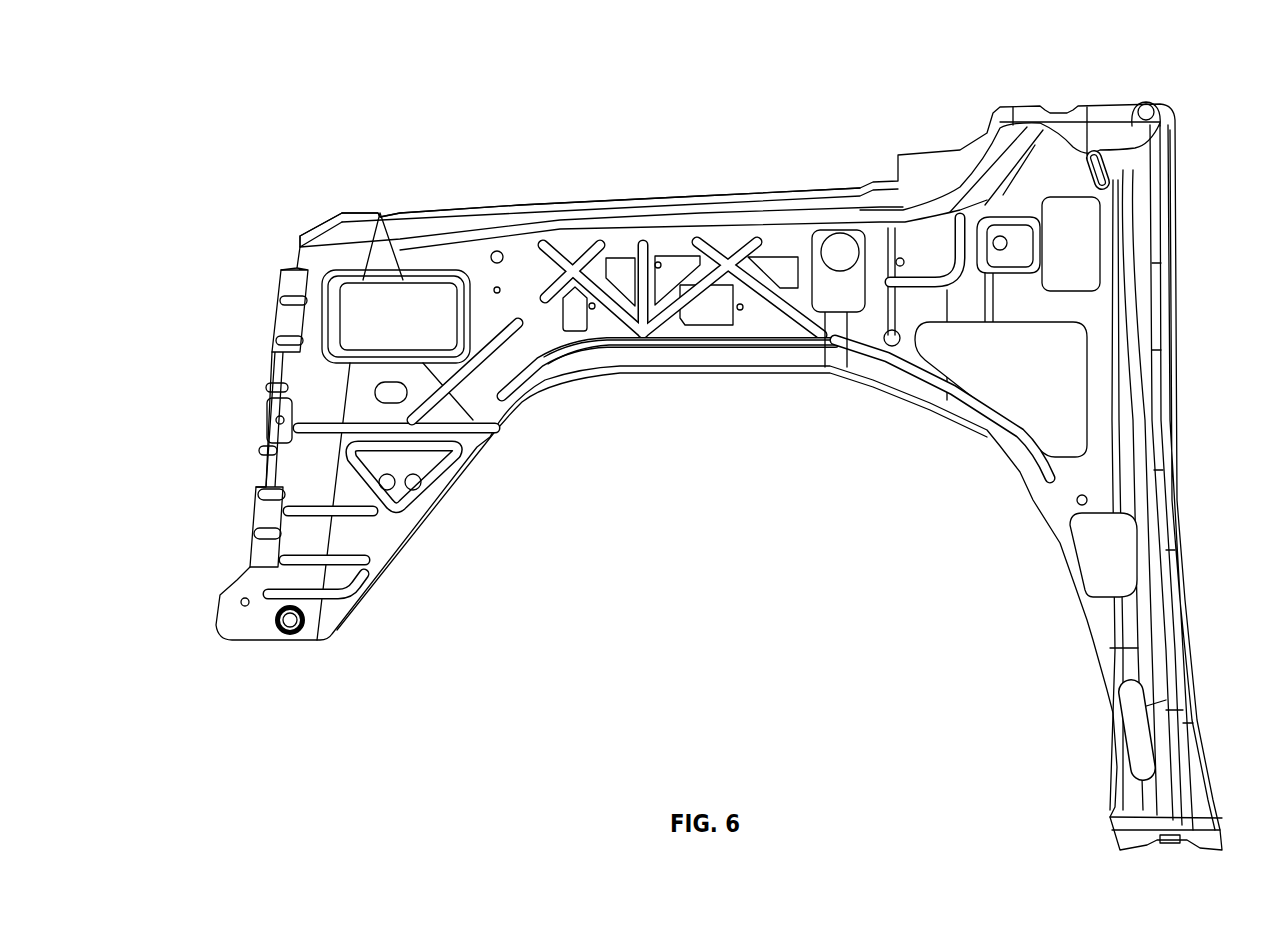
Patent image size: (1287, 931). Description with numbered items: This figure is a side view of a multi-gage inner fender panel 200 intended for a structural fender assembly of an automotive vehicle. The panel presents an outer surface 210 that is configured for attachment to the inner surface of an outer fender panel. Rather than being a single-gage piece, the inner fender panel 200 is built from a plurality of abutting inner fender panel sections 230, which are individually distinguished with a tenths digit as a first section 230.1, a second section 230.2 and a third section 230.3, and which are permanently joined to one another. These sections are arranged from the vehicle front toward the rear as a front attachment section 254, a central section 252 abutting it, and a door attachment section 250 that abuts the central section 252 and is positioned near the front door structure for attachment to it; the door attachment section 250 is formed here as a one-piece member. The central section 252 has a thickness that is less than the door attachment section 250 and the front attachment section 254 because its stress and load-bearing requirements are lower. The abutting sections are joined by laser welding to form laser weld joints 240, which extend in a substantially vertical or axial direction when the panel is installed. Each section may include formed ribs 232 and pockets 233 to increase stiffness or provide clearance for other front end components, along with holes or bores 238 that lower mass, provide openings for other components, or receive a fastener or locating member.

The inner fender panel 200 is at (230, 82).
The front attachment section 254 is at (372, 121).
The central section 252 is at (882, 106).
The door attachment section 250 is at (1177, 93).
The inner fender panel sections 230 is at (366, 210).
The first inner fender panel section 230.1 is at (320, 237).
The second inner fender panel section 230.2 is at (462, 211).
The third inner fender panel section 230.3 is at (1004, 457).
The outer surface 210 is at (598, 320).
The formed ribs 232 is at (507, 350).
The pockets 233 is at (836, 294).
The laser weld joints 240 is at (343, 398).
The holes or bores 238 is at (240, 600).